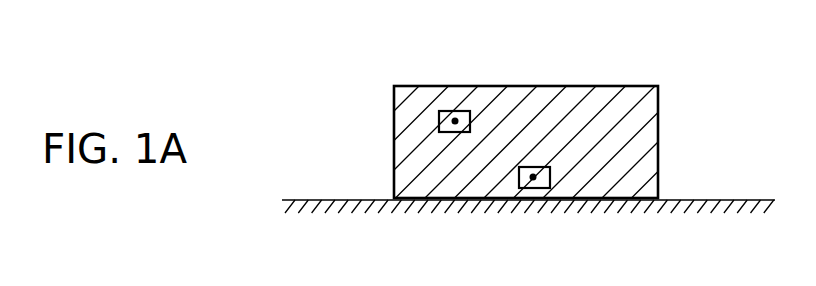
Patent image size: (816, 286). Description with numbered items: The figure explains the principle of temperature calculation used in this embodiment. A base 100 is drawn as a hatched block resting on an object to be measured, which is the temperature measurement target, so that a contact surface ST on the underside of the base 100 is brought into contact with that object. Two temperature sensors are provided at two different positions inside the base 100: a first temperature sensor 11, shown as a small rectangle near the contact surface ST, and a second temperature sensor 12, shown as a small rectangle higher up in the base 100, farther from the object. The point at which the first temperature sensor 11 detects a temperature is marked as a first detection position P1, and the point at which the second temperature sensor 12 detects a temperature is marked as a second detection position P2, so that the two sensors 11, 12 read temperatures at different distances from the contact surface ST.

The base 100 is at (658, 125).
The second temperature sensor 12 is at (447, 113).
The first temperature sensor 11 is at (527, 167).
The first detection position P1 is at (537, 167).
The second detection position P2 is at (458, 113).
The contact surface ST is at (630, 200).